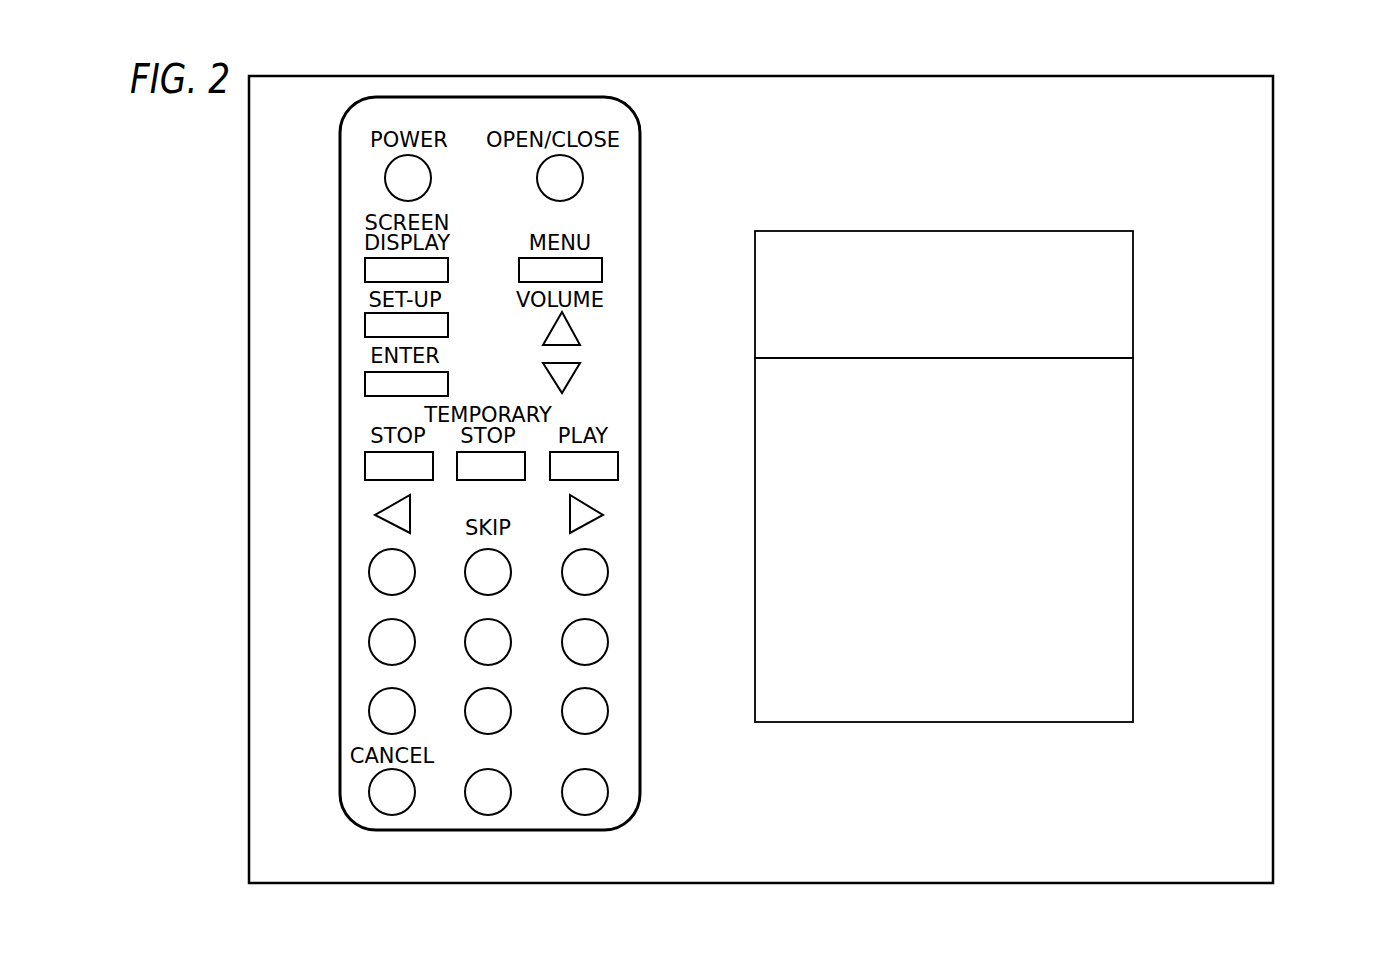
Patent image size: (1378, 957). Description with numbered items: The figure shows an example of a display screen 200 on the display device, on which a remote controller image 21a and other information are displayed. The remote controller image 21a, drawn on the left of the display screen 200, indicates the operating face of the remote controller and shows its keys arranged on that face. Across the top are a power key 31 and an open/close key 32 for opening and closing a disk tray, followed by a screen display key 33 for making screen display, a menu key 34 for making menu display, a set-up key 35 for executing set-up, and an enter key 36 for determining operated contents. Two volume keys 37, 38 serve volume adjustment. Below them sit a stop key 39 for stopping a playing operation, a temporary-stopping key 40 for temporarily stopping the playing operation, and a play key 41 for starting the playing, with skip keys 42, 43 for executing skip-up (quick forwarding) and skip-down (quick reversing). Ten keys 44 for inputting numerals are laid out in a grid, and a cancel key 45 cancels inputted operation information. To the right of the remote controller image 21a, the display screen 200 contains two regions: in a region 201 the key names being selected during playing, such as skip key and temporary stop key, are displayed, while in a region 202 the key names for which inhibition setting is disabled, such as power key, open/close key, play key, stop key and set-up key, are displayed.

The display screen 200 is at (1273, 480).
The region 201 is at (1133, 298).
The region 202 is at (1133, 523).
The remote controller image 21a is at (640, 221).
The power key 31 is at (385, 179).
The open/close key 32 is at (583, 178).
The screen display key 33 is at (365, 268).
The menu key 34 is at (602, 268).
The set-up key 35 is at (365, 324).
The enter key 36 is at (365, 382).
The volume key 37 is at (580, 338).
The volume key 38 is at (580, 365).
The stop key 39 is at (365, 464).
The temporary-stopping key 40 is at (520, 480).
The play key 41 is at (618, 466).
The skip key 42 is at (598, 521).
The skip key 43 is at (375, 515).
The ten keys 44 is at (372, 588).
The cancel key 45 is at (369, 792).